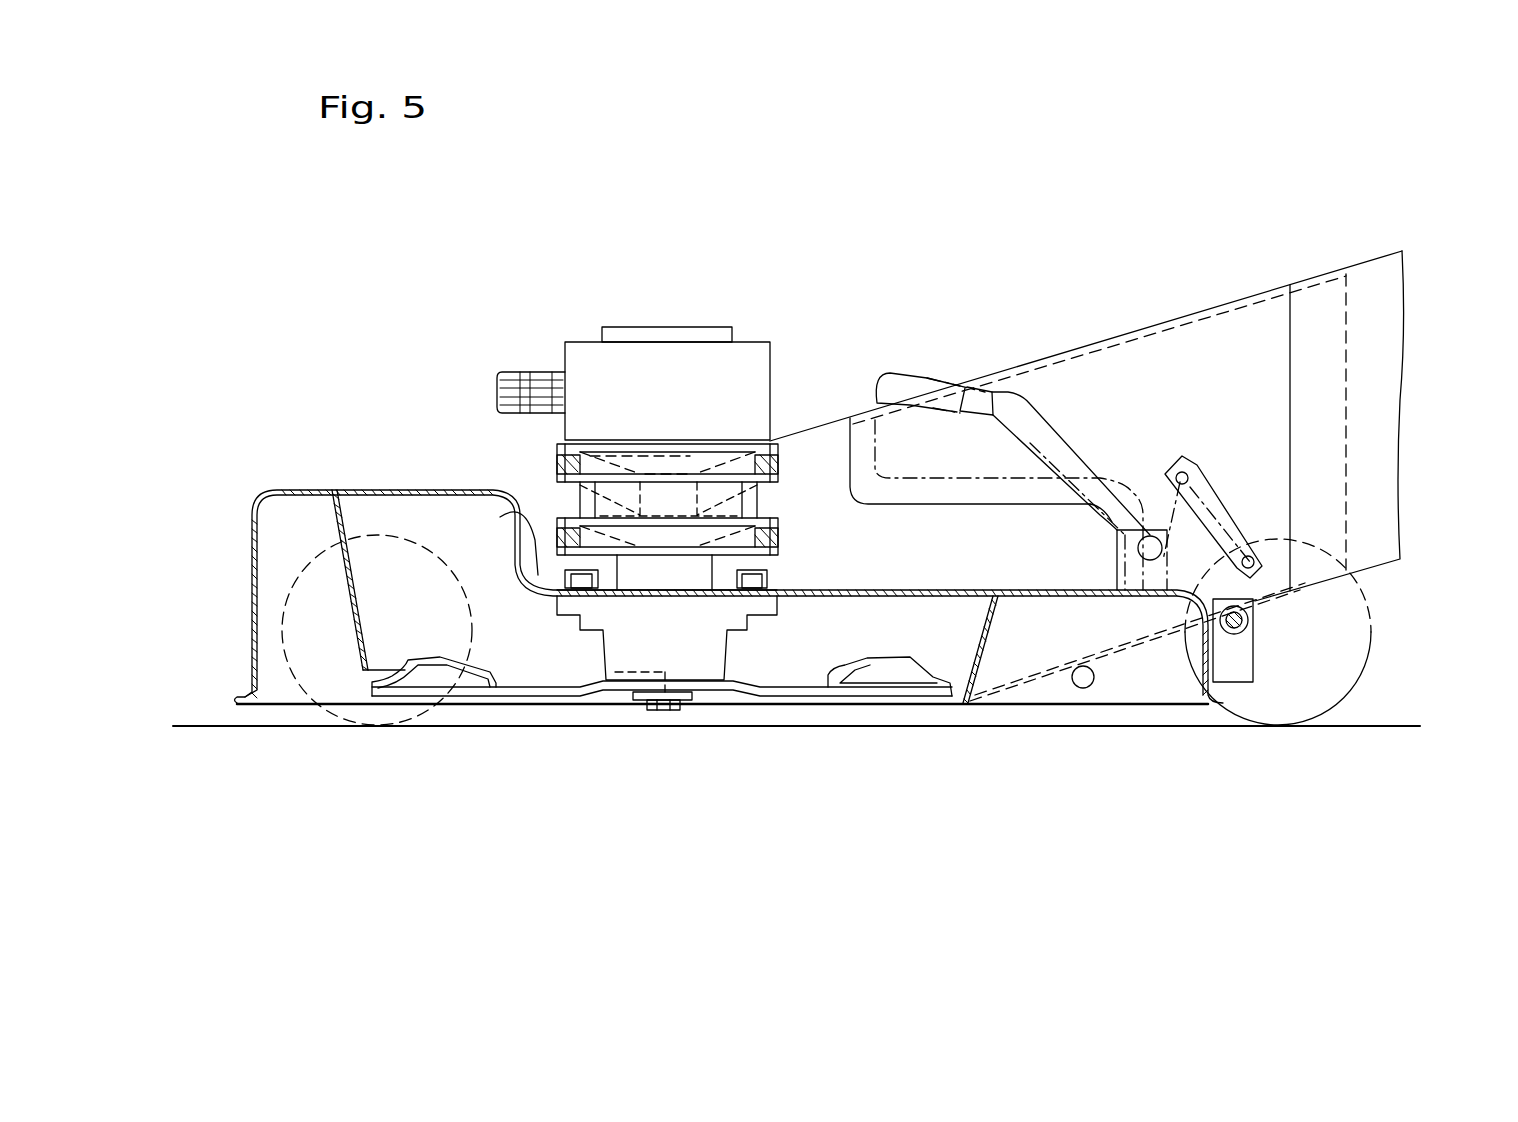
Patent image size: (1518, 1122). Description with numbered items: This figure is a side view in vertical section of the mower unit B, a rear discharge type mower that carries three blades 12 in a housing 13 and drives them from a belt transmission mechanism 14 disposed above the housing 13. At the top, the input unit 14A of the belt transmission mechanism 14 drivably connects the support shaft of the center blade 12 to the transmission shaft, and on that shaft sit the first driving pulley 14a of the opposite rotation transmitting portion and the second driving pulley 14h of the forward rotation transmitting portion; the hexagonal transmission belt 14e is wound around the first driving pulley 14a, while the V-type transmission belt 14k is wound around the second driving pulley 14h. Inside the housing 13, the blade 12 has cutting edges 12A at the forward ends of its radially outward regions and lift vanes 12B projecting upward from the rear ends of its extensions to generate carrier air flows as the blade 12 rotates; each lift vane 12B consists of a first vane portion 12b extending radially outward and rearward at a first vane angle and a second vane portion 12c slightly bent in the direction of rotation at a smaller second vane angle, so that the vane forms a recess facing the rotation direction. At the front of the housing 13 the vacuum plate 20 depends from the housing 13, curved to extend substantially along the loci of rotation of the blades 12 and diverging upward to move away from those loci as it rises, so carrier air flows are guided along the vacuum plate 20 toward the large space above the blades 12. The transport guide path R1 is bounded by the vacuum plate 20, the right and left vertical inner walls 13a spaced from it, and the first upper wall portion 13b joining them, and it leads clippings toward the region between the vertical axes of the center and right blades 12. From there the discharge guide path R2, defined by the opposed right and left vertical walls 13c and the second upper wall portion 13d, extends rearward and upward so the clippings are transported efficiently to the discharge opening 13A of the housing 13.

The housing 13 is at (255, 495).
The vertical inner walls 13a is at (535, 535).
The first upper wall portion 13b is at (393, 488).
The vertical walls 13c is at (828, 450).
The second upper wall portion 13d is at (818, 440).
The discharge opening 13A is at (1350, 400).
The belt transmission mechanism 14 is at (535, 360).
The input unit 14A is at (663, 350).
The first driving pulley 14a is at (678, 456).
The transmission belt 14e is at (548, 462).
The transmission belt 14k is at (785, 526).
The second driving pulley 14h is at (775, 560).
The vacuum plate 20 is at (355, 590).
The blade 12 is at (535, 706).
The cutting edges 12A is at (938, 697).
The lift vanes 12B is at (662, 752).
The first vane portion 12b is at (472, 675).
The second vane portion 12c is at (418, 673).
The mower unit B is at (318, 392).
The transport guide path R1 is at (380, 520).
The discharge guide path R2 is at (1108, 400).